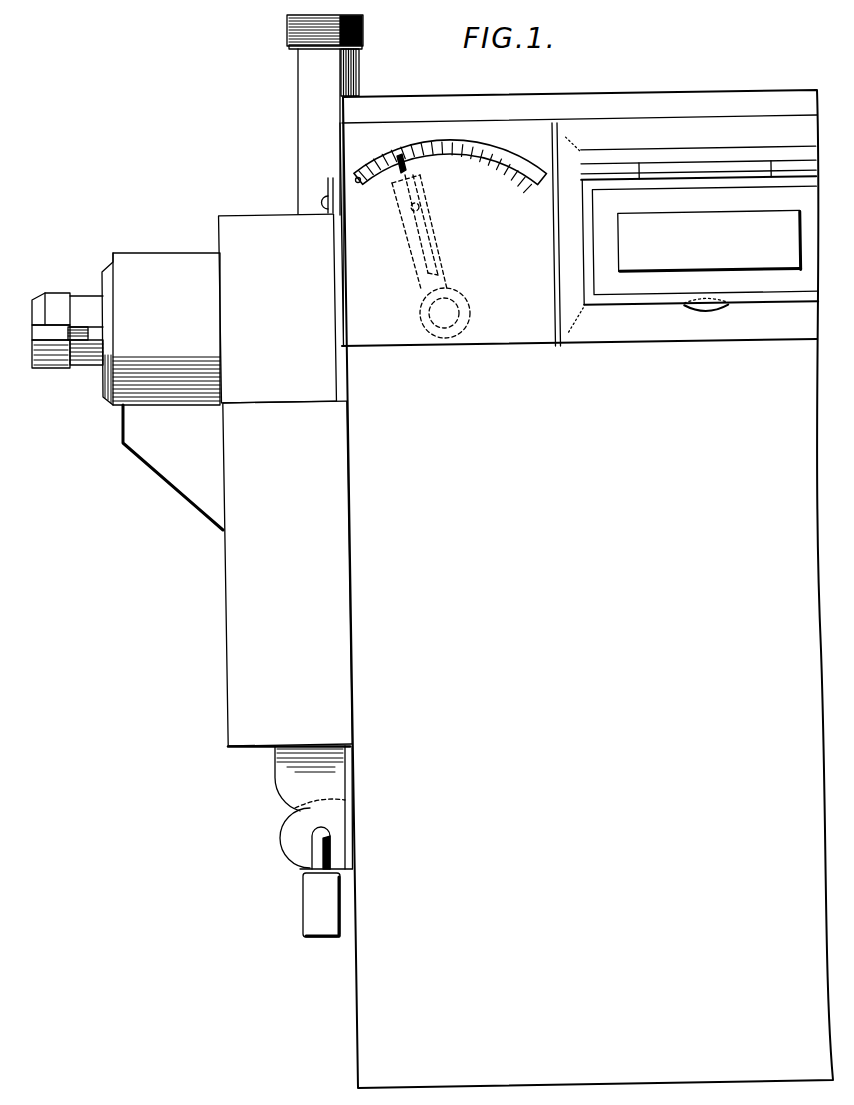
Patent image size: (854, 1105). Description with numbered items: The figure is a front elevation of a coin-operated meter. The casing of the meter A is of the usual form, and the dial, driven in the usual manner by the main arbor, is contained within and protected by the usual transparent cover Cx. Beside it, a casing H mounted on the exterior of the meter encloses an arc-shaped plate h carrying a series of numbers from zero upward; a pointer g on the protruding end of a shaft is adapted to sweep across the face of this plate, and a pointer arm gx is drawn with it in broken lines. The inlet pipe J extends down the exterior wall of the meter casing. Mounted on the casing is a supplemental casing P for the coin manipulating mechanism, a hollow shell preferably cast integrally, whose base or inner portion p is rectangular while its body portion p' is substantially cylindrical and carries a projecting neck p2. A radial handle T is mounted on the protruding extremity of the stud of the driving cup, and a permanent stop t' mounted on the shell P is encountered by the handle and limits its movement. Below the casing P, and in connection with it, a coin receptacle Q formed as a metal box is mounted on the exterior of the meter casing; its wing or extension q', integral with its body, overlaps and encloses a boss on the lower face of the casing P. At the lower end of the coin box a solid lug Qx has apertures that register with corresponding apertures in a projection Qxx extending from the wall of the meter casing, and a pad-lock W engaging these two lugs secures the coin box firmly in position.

The casing of the meter A is at (587, 589).
The casing H is at (427, 221).
The arc-shaped plate h is at (469, 151).
The pointer g is at (408, 163).
The pointer arm gx is at (447, 223).
The transparent cover Cx is at (692, 232).
The inlet pipe J is at (310, 115).
The supplemental casing P is at (219, 309).
The base or inner portion p is at (278, 308).
The body portion p' is at (161, 329).
The projecting neck p2 is at (86, 312).
The radial handle T is at (60, 332).
The permanent stop t' is at (103, 342).
The wing or extension q' is at (173, 467).
The coin receptacle Q is at (287, 573).
The solid lug Qx is at (336, 776).
The projection Qxx is at (382, 807).
The pad-lock W is at (313, 938).